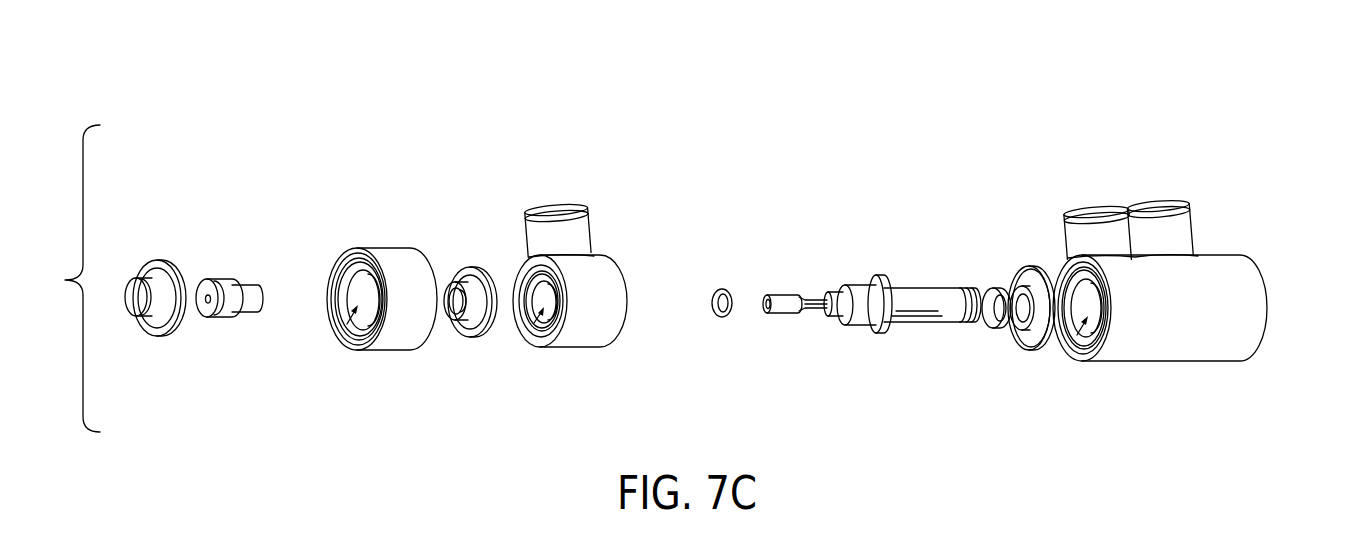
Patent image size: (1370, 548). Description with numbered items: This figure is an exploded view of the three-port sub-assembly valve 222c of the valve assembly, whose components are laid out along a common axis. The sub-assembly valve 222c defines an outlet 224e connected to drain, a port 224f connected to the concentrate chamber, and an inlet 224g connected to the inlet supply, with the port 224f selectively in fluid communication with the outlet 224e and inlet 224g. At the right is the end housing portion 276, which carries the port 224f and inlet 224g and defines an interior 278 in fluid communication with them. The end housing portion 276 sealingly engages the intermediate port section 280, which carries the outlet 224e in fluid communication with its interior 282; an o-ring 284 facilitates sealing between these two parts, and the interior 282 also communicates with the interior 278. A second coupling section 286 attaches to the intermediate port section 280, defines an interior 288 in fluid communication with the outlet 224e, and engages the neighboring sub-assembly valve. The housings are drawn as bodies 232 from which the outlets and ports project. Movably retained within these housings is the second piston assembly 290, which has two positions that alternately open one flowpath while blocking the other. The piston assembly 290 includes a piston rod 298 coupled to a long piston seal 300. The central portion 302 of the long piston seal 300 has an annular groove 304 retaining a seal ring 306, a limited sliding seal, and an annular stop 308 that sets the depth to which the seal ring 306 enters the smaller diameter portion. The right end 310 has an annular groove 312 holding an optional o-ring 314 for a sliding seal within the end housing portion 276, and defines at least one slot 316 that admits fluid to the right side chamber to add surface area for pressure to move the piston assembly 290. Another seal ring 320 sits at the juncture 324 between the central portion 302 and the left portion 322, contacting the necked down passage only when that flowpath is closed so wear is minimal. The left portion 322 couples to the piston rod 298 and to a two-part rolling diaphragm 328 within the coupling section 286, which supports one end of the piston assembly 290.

The third sub-assembly valve 222c is at (810, 106).
The outlet 224e is at (575, 205).
The port 224f is at (1090, 203).
The inlet 224g is at (1168, 197).
The body 232 is at (814, 276).
The end housing portion 276 is at (1177, 267).
The interior 278 is at (1077, 342).
The intermediate port section 280 is at (589, 259).
The interior 282 is at (533, 325).
The o-ring 284 is at (1029, 297).
The second coupling section 286 is at (377, 286).
The interior 288 is at (340, 334).
The second piston assembly 290 is at (904, 294).
The piston rod 298 is at (218, 278).
The long piston seal 300 is at (778, 315).
The central portion 302 is at (866, 314).
The annular groove 304 is at (926, 303).
The seal ring 306 is at (992, 328).
The annular stop 308 is at (865, 278).
The right end 310 is at (940, 306).
The annular groove 312 is at (962, 288).
The o-ring 314 is at (1027, 338).
The slot 316 is at (930, 322).
The seal ring 320 is at (720, 289).
The left portion 322 is at (790, 299).
The juncture 324 is at (841, 320).
The two-part rolling diaphragm 328 is at (152, 340).